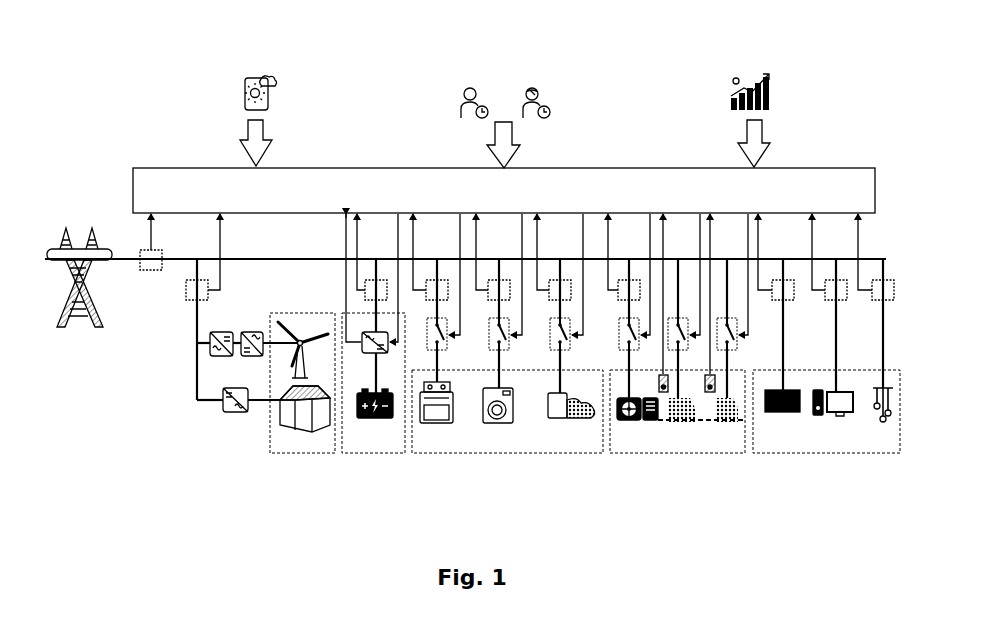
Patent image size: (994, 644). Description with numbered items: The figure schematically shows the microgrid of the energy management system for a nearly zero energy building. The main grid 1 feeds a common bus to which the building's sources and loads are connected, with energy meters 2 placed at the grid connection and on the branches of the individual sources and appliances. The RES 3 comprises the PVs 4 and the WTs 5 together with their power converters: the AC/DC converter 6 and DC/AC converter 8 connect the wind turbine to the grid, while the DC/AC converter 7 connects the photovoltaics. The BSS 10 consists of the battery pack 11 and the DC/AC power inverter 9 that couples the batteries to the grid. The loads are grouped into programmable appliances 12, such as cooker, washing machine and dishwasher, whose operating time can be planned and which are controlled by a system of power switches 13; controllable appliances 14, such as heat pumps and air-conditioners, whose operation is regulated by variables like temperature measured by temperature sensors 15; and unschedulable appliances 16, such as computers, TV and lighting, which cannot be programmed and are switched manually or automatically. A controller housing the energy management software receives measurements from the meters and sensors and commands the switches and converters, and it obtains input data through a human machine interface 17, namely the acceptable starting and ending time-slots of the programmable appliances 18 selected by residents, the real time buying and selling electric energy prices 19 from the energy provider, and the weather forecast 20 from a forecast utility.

The main grid 1 is at (72, 283).
The energy meters 2 is at (524, 265).
The RES 3 is at (272, 430).
The PVs 4 is at (293, 402).
The WTs 5 is at (304, 338).
The AC/DC converter 6 is at (254, 330).
The DC/AC converter 7 is at (223, 406).
The DC/AC converter 8 is at (222, 330).
The DC/AC power inverter 9 is at (370, 355).
The BSS 10 is at (375, 455).
The battery pack 11 is at (385, 420).
The programmable appliances 12 is at (516, 455).
The power switches 13 is at (587, 292).
The controllable appliances 14 is at (697, 455).
The temperature sensors 15 is at (678, 303).
The unschedulable appliances 16 is at (862, 455).
The human machine interface 17 is at (877, 185).
The acceptable starting and ending time-slots of the programmable appliances 18 is at (513, 135).
The real time buying and selling electric energy prices 19 is at (765, 135).
The weather forecast 20 is at (265, 128).